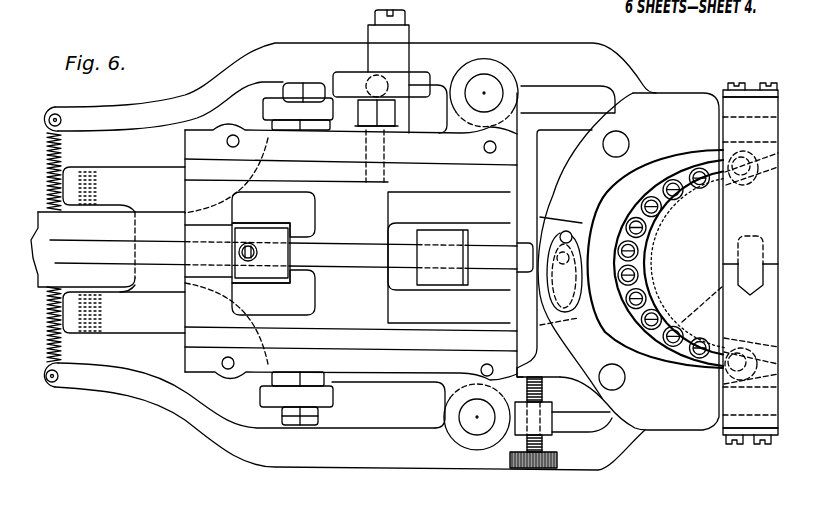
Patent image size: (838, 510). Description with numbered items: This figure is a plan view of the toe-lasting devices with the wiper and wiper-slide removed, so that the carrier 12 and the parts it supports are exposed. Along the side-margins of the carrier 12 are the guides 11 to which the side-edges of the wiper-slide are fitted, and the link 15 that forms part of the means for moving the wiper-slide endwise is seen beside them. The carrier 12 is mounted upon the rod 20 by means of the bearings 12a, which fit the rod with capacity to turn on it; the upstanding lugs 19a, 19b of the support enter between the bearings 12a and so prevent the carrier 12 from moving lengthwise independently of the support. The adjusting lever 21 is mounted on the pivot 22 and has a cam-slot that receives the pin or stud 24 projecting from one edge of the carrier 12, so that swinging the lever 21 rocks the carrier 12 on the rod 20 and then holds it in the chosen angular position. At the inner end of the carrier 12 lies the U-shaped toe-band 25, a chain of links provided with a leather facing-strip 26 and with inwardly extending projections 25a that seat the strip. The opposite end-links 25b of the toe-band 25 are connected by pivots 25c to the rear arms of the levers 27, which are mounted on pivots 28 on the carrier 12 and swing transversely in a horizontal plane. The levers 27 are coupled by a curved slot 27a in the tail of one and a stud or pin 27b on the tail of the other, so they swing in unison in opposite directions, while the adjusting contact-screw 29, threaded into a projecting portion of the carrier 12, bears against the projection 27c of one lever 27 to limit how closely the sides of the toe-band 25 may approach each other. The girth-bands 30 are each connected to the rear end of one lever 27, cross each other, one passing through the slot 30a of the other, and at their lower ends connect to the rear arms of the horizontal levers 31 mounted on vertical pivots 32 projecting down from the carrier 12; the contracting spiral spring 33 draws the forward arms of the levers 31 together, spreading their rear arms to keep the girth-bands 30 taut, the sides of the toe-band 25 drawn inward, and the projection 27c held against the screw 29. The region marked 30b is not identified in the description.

The guides 11 is at (411, 175).
The carrier 12 is at (408, 373).
The bearings 12a is at (489, 288).
The link 15 is at (157, 177).
The upstanding lug 19a is at (251, 247).
The upstanding lug 19b is at (270, 277).
The rod 20 is at (328, 247).
The adjusting lever 21 is at (418, 80).
The pivot 22 is at (388, 6).
The pin or stud 24 is at (357, 112).
The toe-band 25 is at (624, 232).
The inwardly extending projections 25a is at (720, 296).
The end-links 25b is at (765, 165).
The pivots 25c is at (740, 357).
The facing-strip 26 is at (658, 318).
The levers 27 is at (651, 101).
The curved slot 27a is at (573, 217).
The stud or pin 27b is at (584, 262).
The projection 27c is at (523, 370).
The pivots 28 is at (611, 156).
The adjusting contact-screw 29 is at (543, 448).
The girth-bands 30 is at (772, 217).
The slot 30a is at (765, 273).
The slide block recess 30b is at (738, 264).
The horizontal levers 31 is at (308, 43).
The vertical pivots 32 is at (492, 90).
The contracting spiral spring 33 is at (57, 314).